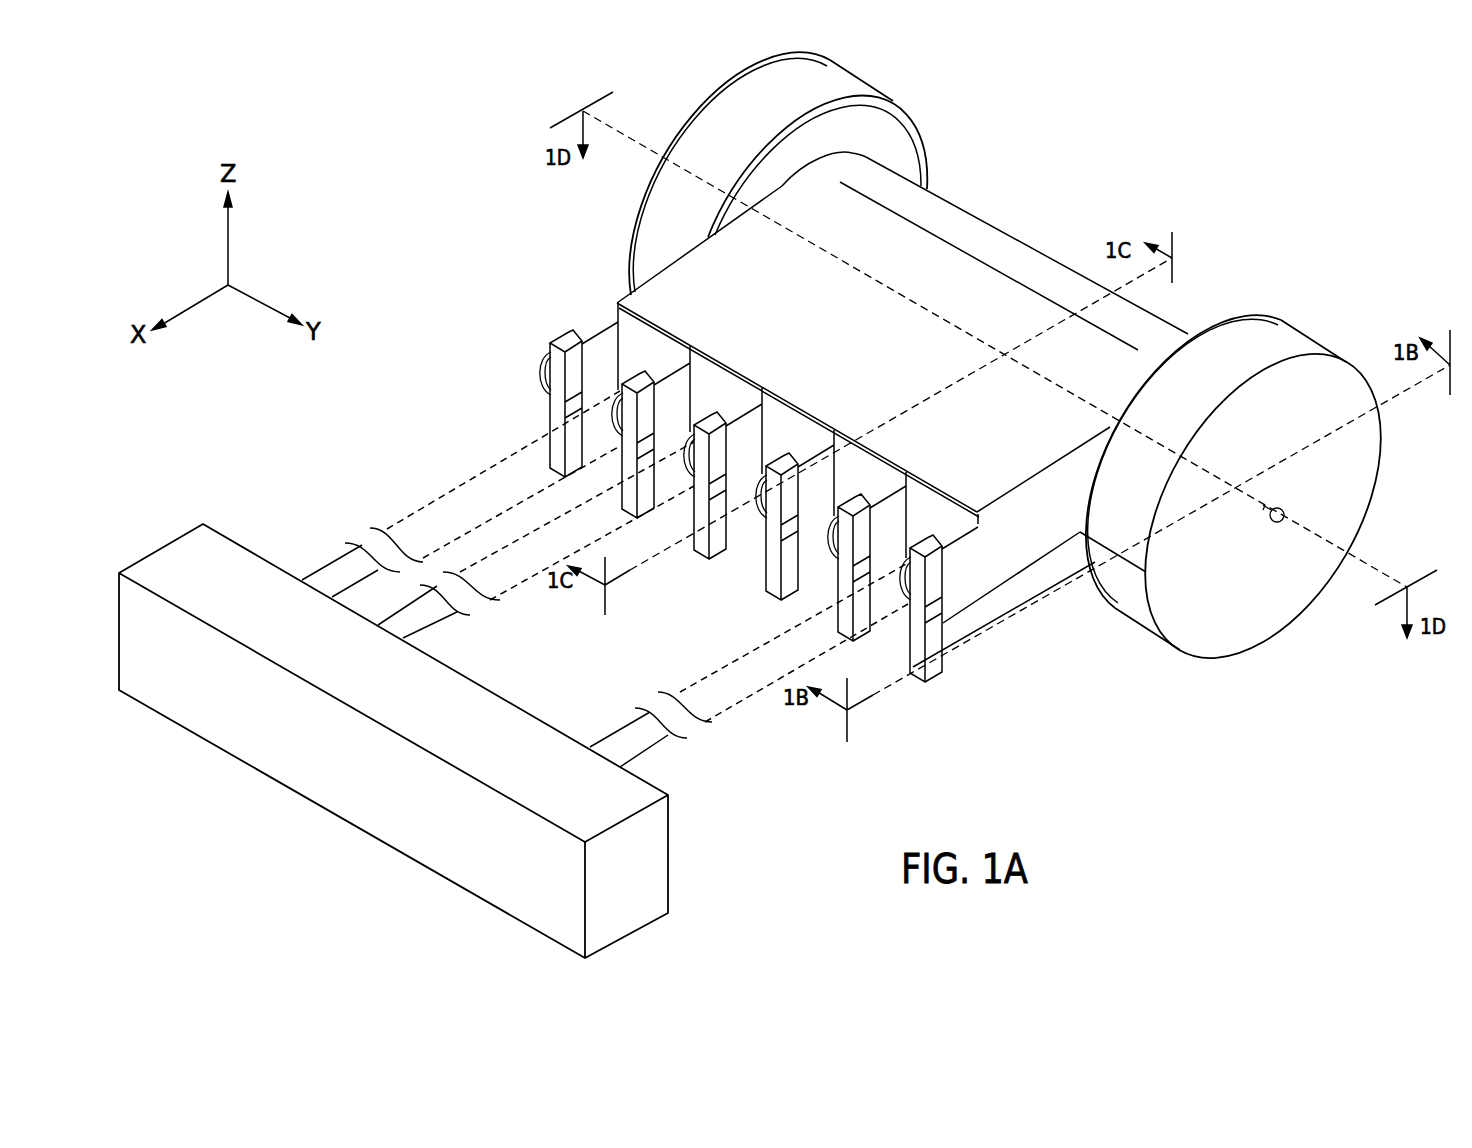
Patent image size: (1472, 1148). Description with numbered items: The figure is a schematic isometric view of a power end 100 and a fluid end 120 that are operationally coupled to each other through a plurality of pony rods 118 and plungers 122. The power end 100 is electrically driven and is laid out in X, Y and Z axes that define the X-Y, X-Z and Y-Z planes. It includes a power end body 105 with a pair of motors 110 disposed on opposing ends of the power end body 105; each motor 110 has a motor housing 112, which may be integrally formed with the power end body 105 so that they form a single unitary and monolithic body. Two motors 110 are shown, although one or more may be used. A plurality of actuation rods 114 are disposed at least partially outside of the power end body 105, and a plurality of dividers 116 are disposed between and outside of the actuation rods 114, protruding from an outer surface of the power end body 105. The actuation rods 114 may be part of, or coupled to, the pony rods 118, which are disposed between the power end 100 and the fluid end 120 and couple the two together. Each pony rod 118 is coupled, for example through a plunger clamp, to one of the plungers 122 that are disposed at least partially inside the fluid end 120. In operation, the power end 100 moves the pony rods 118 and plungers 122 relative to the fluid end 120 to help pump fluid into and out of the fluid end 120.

The power end 100 is at (1332, 201).
The power end body 105 is at (1036, 250).
The motor 110 is at (875, 88).
The motor housing 112 is at (670, 227).
The actuation rod 114 is at (622, 392).
The divider 116 is at (697, 528).
The pony rod 118 is at (502, 467).
The fluid end 120 is at (369, 762).
The plunger 122 is at (390, 615).